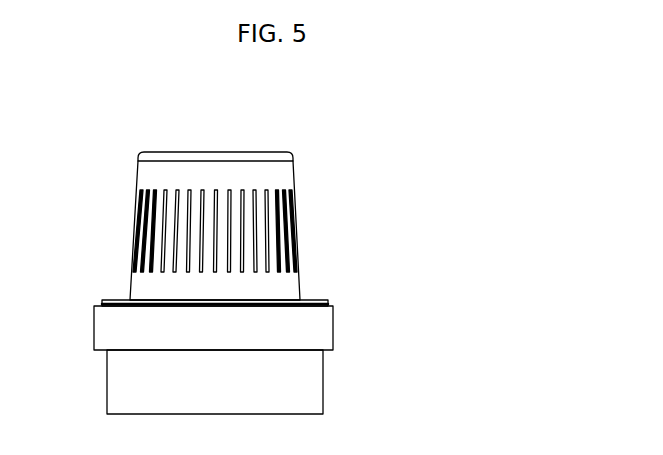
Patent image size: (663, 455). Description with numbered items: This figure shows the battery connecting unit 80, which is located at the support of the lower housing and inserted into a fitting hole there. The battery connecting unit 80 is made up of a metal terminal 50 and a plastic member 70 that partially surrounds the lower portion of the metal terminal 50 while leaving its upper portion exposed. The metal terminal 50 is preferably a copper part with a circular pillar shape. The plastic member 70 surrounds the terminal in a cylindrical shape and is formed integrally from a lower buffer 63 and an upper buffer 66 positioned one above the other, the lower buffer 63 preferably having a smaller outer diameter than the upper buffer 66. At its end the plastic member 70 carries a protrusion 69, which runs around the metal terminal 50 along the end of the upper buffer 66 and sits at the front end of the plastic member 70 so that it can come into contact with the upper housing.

The battery connecting unit 80 is at (154, 104).
The metal terminal 50 is at (284, 173).
The plastic member 70 is at (269, 343).
The protrusion 69 is at (315, 299).
The upper buffer 66 is at (323, 327).
The lower buffer 63 is at (250, 382).